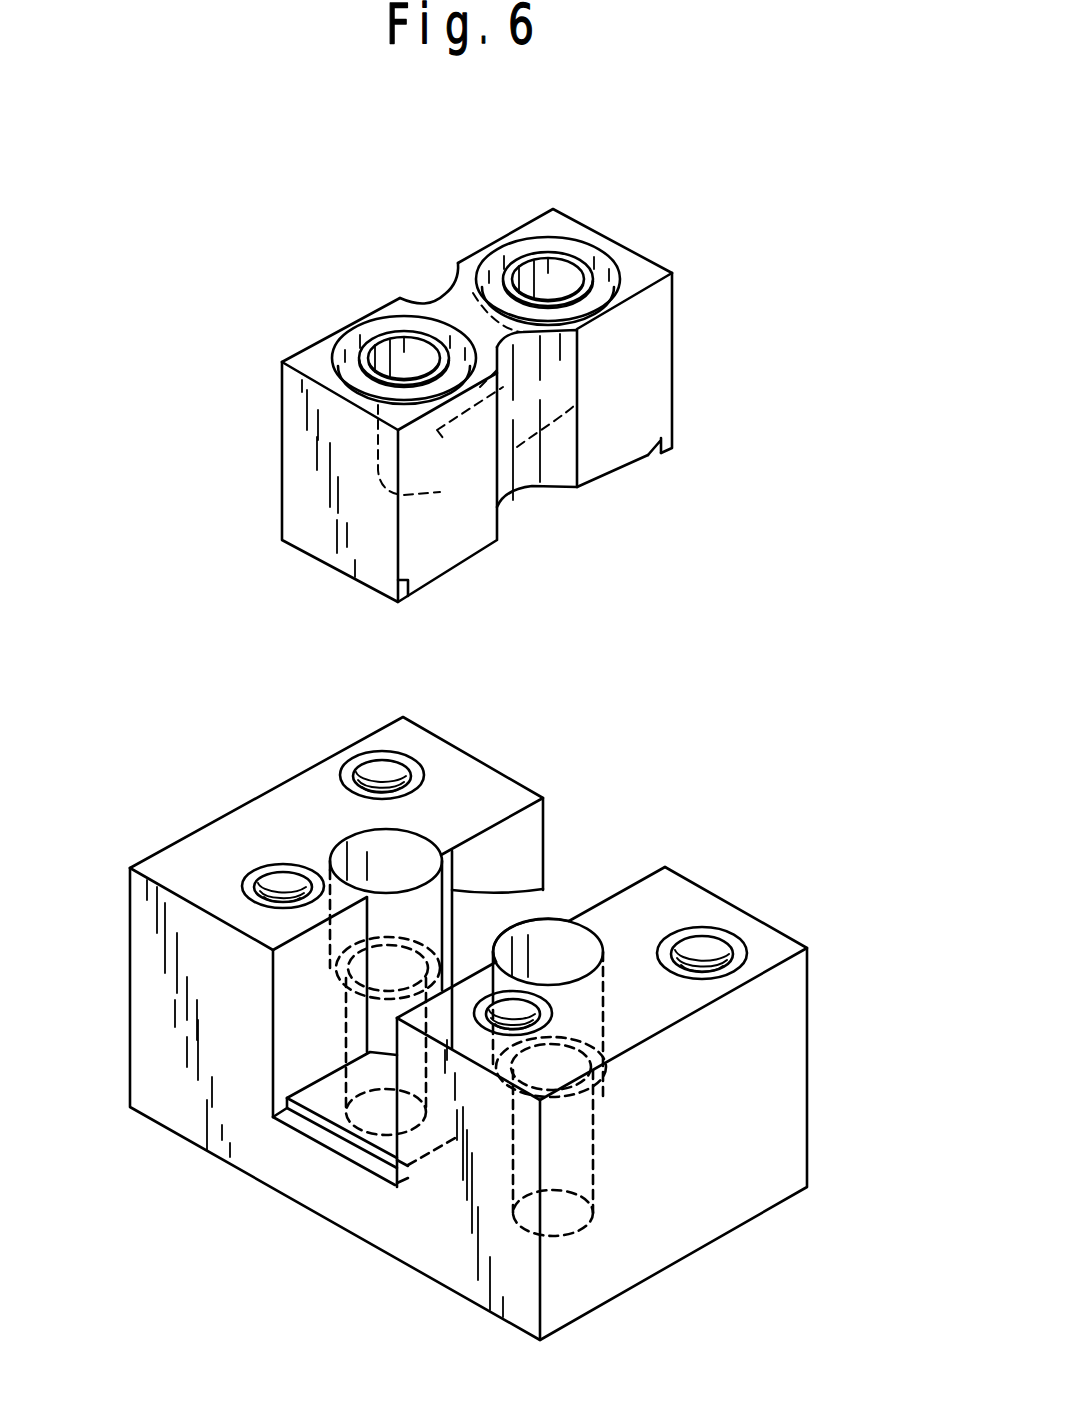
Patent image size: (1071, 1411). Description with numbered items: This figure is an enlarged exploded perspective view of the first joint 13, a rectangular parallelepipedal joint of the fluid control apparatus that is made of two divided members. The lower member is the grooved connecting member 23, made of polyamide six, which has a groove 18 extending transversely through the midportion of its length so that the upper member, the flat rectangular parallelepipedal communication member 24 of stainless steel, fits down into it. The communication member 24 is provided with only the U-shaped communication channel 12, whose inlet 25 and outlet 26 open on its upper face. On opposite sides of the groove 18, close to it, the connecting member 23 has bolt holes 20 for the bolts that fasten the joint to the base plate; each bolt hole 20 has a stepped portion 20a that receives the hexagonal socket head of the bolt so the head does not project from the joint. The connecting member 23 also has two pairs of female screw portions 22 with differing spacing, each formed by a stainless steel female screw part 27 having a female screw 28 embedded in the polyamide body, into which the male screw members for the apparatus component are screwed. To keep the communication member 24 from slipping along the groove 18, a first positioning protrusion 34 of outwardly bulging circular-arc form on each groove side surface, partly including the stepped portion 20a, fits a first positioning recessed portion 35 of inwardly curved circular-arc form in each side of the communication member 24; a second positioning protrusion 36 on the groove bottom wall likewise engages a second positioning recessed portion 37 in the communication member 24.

The communication channel 12 is at (443, 490).
The first joint 13 is at (763, 603).
The groove 18 is at (620, 873).
The bolt hole 20 is at (418, 852).
The stepped portion 20a is at (337, 983).
The female screw portion 22 is at (250, 875).
The connecting member 23 is at (790, 1078).
The communication member 24 is at (653, 376).
The inlet 25 is at (399, 358).
The outlet 26 is at (567, 283).
The female screw part 27 is at (300, 868).
The female screw 28 is at (270, 872).
The first positioning protrusion 34 is at (435, 295).
The first positioning recessed portion 35 is at (520, 493).
The second positioning protrusion 36 is at (327, 1110).
The second positioning recessed portion 37 is at (473, 543).